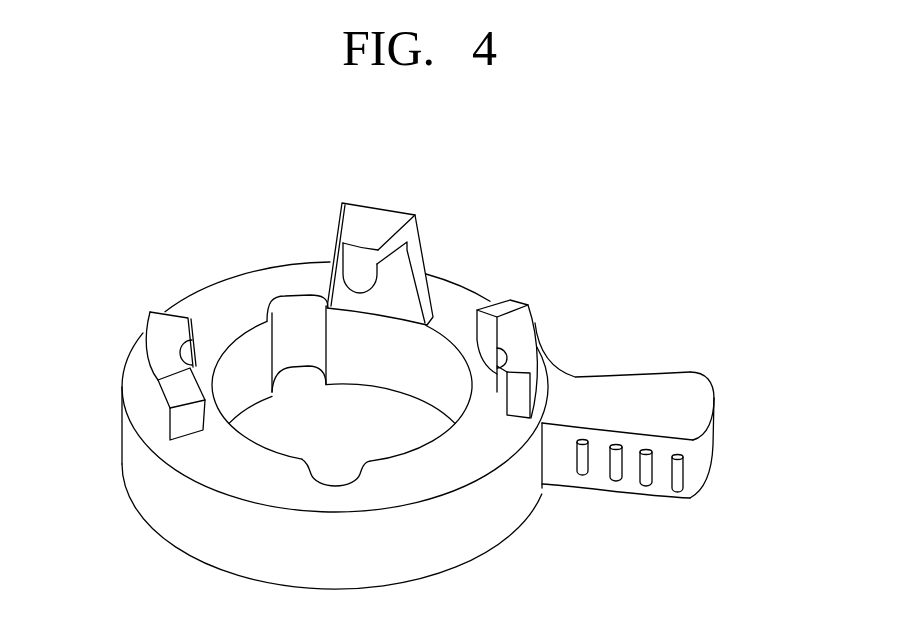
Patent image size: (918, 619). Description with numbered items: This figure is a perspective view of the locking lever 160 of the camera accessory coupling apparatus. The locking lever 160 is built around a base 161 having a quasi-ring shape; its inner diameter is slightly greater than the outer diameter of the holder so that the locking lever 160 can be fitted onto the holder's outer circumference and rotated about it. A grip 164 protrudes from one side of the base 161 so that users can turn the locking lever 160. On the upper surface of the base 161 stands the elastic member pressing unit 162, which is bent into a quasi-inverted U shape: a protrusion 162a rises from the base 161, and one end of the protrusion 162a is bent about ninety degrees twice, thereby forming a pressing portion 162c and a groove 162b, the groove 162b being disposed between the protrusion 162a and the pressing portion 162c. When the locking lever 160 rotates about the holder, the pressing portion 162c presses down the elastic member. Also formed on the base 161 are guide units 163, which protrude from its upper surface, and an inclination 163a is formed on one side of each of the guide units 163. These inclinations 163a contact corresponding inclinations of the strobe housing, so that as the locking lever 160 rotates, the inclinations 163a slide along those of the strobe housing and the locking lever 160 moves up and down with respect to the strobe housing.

The locking lever 160 is at (163, 236).
The base 161 is at (147, 497).
The elastic member pressing unit 162 is at (376, 213).
The protrusion 162a is at (421, 293).
The groove 162b is at (412, 248).
The pressing portion 162c is at (355, 267).
The guide unit 163 is at (158, 328).
The inclination 163a is at (177, 392).
The grip 164 is at (693, 406).